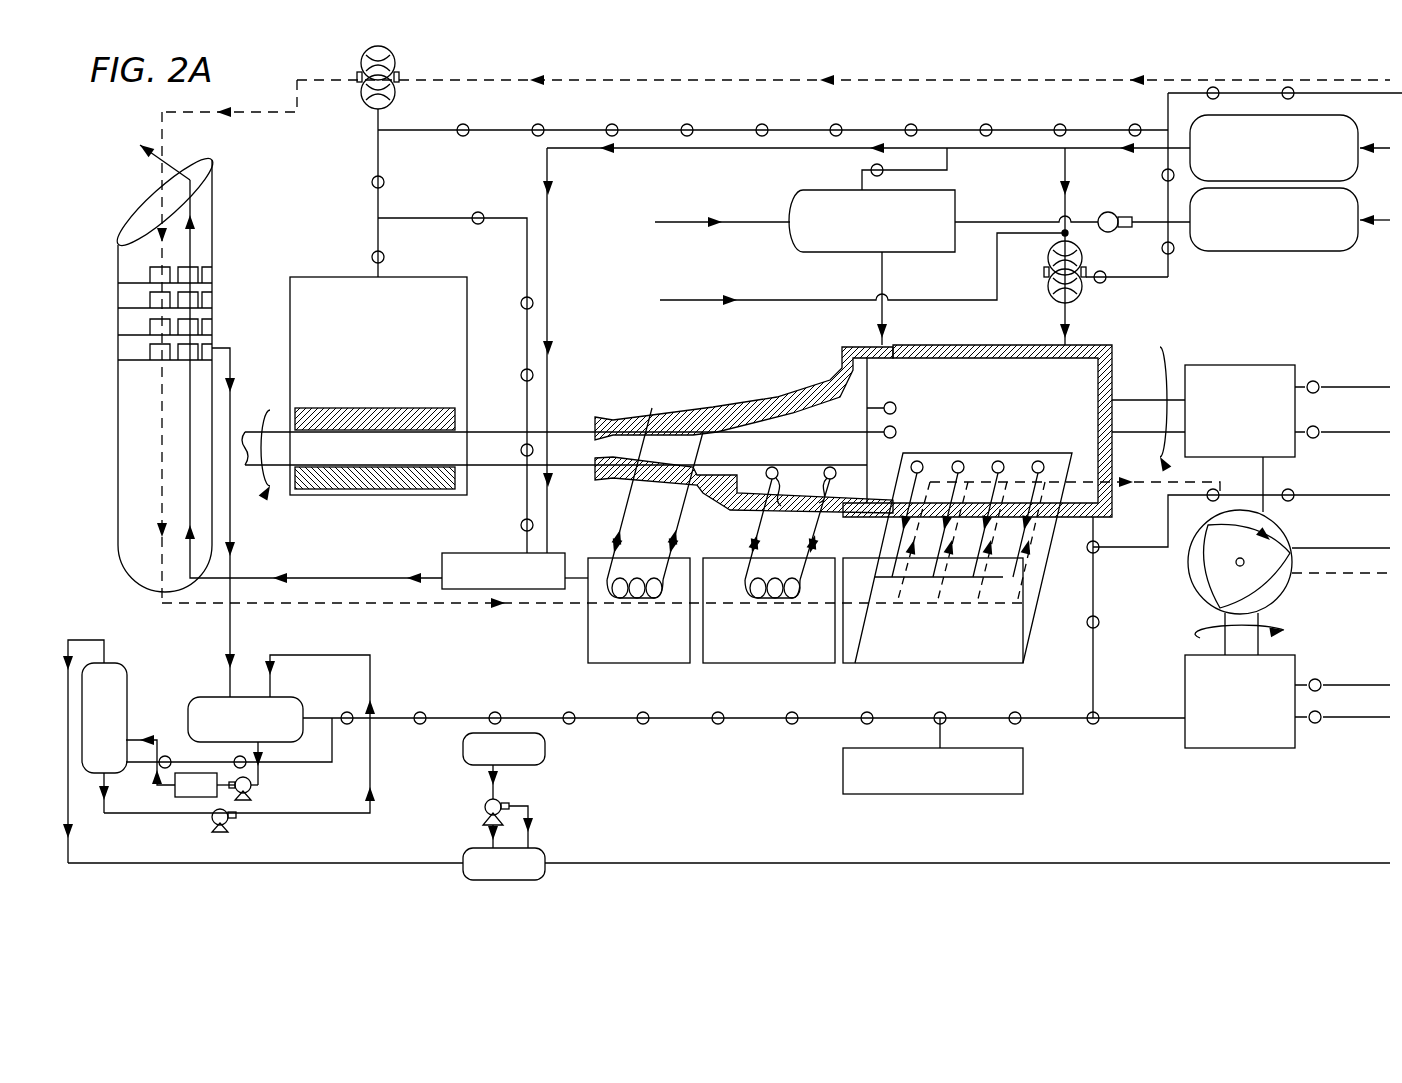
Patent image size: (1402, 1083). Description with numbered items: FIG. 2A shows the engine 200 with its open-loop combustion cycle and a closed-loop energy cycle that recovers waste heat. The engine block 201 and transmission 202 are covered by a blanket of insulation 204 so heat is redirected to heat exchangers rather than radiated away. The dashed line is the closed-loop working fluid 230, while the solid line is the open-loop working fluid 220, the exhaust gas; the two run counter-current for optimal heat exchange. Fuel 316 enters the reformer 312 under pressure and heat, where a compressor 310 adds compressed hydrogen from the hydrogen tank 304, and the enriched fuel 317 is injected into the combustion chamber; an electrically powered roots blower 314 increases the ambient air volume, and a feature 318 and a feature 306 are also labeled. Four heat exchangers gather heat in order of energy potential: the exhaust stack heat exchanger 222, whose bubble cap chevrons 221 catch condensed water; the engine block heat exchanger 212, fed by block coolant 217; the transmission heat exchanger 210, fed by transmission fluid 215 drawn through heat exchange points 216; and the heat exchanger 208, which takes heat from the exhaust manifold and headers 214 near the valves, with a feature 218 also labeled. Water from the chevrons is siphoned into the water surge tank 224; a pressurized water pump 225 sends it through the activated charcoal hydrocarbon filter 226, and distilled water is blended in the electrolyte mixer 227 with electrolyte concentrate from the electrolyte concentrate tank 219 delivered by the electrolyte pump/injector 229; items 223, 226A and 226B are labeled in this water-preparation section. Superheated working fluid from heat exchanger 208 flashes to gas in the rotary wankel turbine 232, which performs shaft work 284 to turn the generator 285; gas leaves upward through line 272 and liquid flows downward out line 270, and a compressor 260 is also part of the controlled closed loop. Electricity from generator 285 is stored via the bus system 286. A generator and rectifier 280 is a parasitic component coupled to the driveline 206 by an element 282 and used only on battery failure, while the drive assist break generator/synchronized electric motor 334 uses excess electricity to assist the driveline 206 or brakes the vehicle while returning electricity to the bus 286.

The engine 200 is at (120, 112).
The exhaust stack heat exchanger 222 is at (212, 242).
The bubble cap chevrons 221 is at (200, 302).
The drive assist break generator/synchronized electric motor 334 is at (325, 277).
The compressor 260 is at (372, 108).
The driveline 206 is at (497, 428).
The transmission 202 is at (688, 425).
The blanket of insulation 204 is at (858, 352).
The engine block 201 is at (1050, 372).
The engine block ports 218 is at (896, 432).
The exhaust manifold and headers 214 is at (1030, 462).
The heat exchanger 208 is at (1020, 655).
The second heat exchanger 212 is at (645, 665).
The engine cooling fluid 217 is at (620, 516).
The transmission heat exchanger 210 is at (770, 665).
The transmission fluid 215 is at (750, 542).
The heat exchange points 216 is at (803, 523).
The working fluid of the open loop cycle 220 is at (300, 574).
The working fluid of the closed loop energy cycle 230 is at (162, 600).
The bus system 286 is at (1025, 772).
The electrolyte concentrate tank 219 is at (545, 750).
The electrolyte pump/injector 229 is at (484, 807).
The mixer 226B is at (548, 860).
The water surge tank 224 is at (204, 696).
The HF unit 226A is at (195, 797).
The pressurized water pump 225 is at (254, 787).
The pump 223 is at (228, 822).
The activated charcoal hydrocarbon filter 226 is at (118, 662).
The electrolyte mixer 227 is at (70, 842).
The reformer 312 is at (800, 205).
The fuel 316 is at (690, 217).
The air intake line 318 is at (755, 300).
The hydrogenated or enriched fuel 317 is at (1000, 219).
The compressor 310 is at (1108, 232).
The roots blower 314 is at (1080, 286).
The oxygen tank 306 is at (1205, 128).
The hydrogen tank 304 is at (1278, 252).
The generator and rectifier 280 is at (1228, 364).
The generator shaft 282 is at (1155, 364).
The rotary wankel turbine 232 is at (1190, 586).
The line 272 is at (1350, 549).
The line 270 is at (1350, 572).
The shaft work 284 is at (1206, 635).
The generator 285 is at (1237, 752).